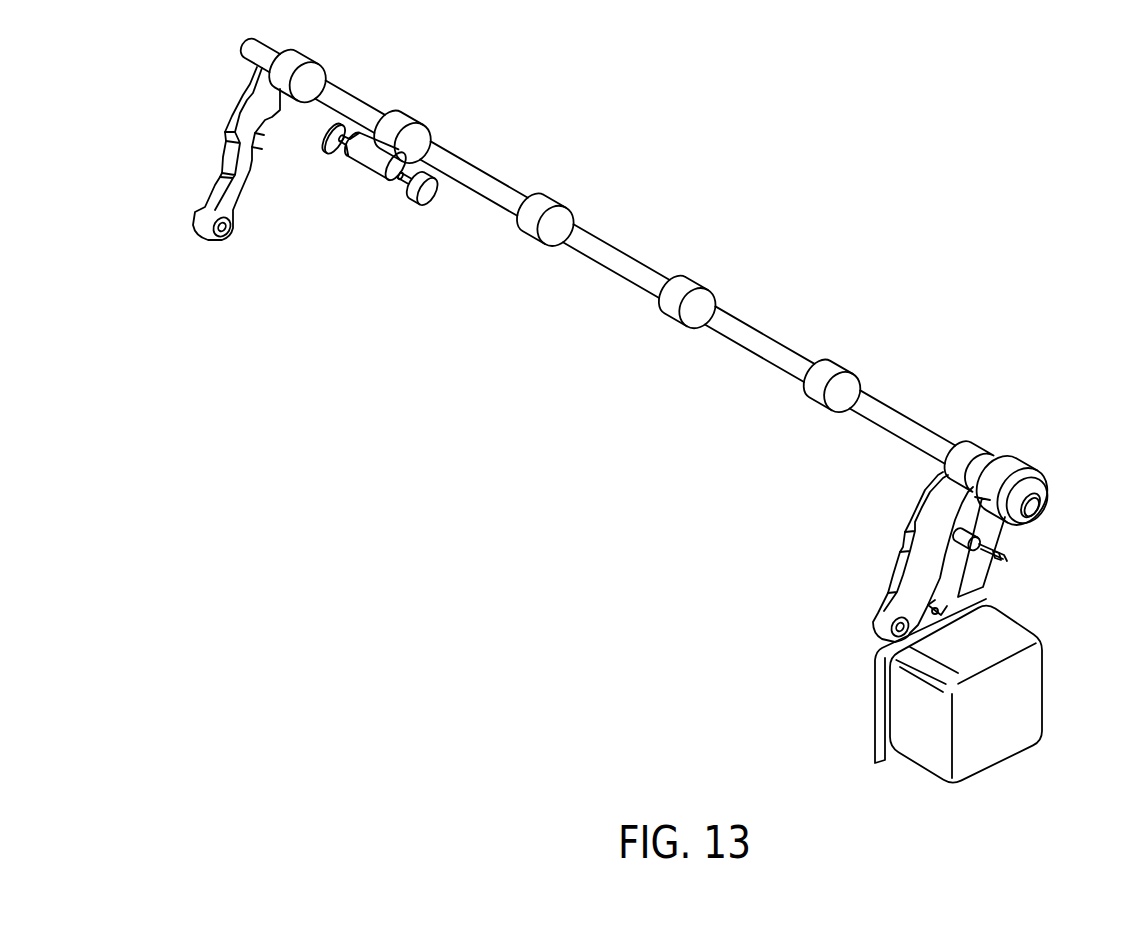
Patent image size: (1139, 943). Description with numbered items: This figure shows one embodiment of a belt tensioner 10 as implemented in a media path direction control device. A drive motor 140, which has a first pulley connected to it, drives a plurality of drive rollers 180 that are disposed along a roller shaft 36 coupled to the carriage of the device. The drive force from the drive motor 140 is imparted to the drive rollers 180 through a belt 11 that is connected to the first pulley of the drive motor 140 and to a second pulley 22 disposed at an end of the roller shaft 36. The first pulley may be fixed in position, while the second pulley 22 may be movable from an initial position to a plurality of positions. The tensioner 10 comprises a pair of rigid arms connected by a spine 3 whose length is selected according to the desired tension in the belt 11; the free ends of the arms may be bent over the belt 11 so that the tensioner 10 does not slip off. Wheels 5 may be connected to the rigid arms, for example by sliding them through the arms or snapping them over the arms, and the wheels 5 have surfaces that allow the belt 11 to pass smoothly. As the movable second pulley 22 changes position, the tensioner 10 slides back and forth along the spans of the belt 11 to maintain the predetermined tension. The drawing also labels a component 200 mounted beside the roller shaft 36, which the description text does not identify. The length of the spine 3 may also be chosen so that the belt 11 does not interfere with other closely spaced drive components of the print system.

The spine 3 is at (997, 561).
The wheels 5 is at (1008, 558).
The belt tensioner 10 is at (953, 542).
The belt 11 is at (1008, 536).
The second pulley 22 is at (1044, 486).
The roller shaft 36 is at (758, 331).
The drive motor 140 is at (1044, 685).
The drive rollers 180 is at (544, 192).
The damper 200 is at (370, 170).